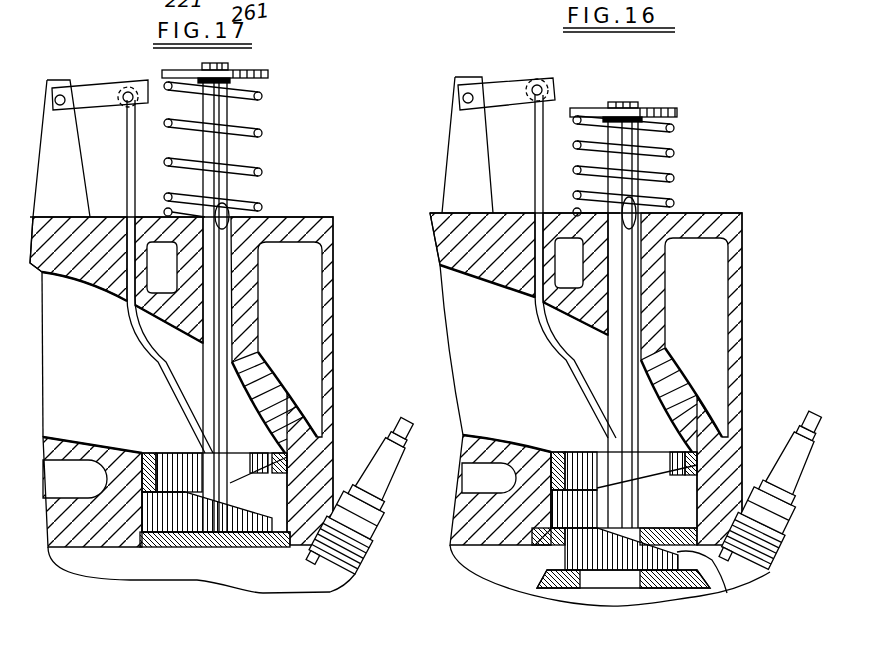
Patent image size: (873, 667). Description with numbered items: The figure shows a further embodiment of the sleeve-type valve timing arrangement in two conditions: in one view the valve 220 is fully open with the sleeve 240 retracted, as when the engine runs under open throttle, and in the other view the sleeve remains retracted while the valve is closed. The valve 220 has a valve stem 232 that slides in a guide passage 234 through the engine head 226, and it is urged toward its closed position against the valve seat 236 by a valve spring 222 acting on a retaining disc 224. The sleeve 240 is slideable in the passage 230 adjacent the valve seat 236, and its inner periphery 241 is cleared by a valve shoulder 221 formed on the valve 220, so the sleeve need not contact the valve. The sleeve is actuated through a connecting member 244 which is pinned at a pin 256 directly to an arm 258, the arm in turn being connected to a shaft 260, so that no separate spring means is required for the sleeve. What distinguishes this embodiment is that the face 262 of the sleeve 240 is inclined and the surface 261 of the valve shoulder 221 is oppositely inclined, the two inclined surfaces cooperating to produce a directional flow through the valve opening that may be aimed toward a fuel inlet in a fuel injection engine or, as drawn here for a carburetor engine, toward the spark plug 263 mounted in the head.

In FIG. 17, the valve 220 is at (173, 547).
In FIG. 16, the valve 220 is at (583, 578).
In FIG. 17, the valve shoulder 221 is at (122, 541).
In FIG. 16, the valve shoulder 221 is at (573, 547).
In FIG. 17, the valve spring 222 is at (260, 133).
In FIG. 16, the valve spring 222 is at (672, 153).
In FIG. 17, the retaining disc 224 is at (258, 72).
In FIG. 16, the retaining disc 224 is at (668, 108).
In FIG. 17, the engine head 226 is at (335, 350).
In FIG. 16, the engine head 226 is at (745, 350).
In FIG. 17, the passage 230 is at (73, 354).
In FIG. 16, the passage 230 is at (476, 350).
In FIG. 16, the valve stem 232 is at (627, 405).
In FIG. 17, the guide passage 234 is at (226, 210).
In FIG. 16, the guide passage 234 is at (634, 203).
In FIG. 17, the valve seat 236 is at (287, 547).
In FIG. 17, the sleeve 240 is at (145, 453).
In FIG. 16, the sleeve 240 is at (557, 452).
In FIG. 17, the inner periphery 241 is at (172, 453).
In FIG. 16, the inner periphery 241 is at (582, 452).
In FIG. 17, the connecting member 244 is at (172, 372).
In FIG. 16, the connecting member 244 is at (583, 378).
In FIG. 17, the pin 256 is at (127, 102).
In FIG. 16, the pin 256 is at (545, 88).
In FIG. 17, the arm 258 is at (105, 82).
In FIG. 16, the arm 258 is at (517, 67).
In FIG. 17, the shaft 260 is at (60, 95).
In FIG. 16, the shaft 260 is at (463, 100).
In FIG. 17, the surface of valve shoulder 261 is at (253, 543).
In FIG. 16, the surface of valve shoulder 261 is at (710, 587).
In FIG. 17, the inclined face of sleeve 262 is at (262, 480).
In FIG. 16, the inclined face of sleeve 262 is at (667, 478).
In FIG. 17, the spark plug 263 is at (376, 512).
In FIG. 16, the spark plug 263 is at (780, 512).